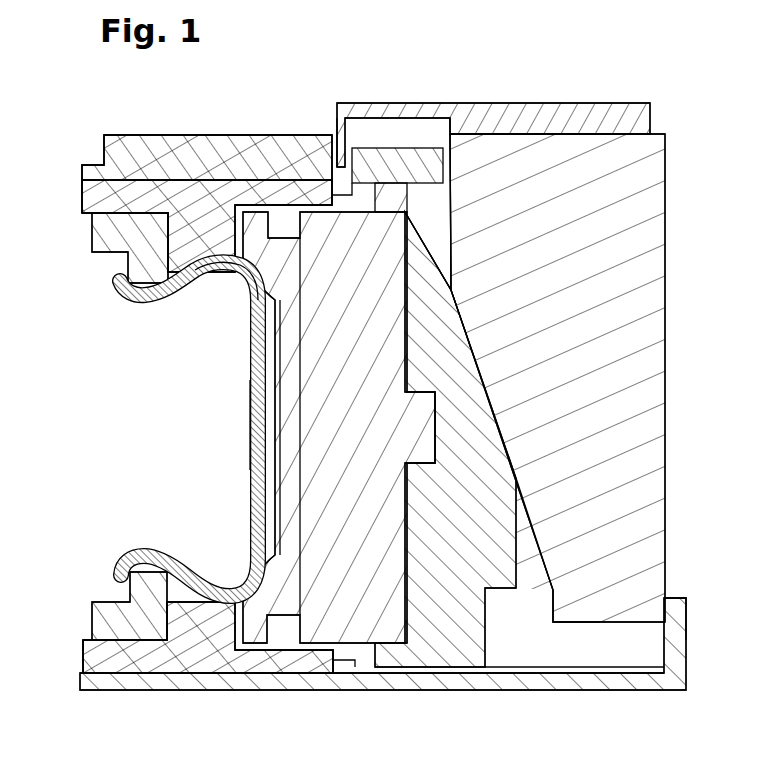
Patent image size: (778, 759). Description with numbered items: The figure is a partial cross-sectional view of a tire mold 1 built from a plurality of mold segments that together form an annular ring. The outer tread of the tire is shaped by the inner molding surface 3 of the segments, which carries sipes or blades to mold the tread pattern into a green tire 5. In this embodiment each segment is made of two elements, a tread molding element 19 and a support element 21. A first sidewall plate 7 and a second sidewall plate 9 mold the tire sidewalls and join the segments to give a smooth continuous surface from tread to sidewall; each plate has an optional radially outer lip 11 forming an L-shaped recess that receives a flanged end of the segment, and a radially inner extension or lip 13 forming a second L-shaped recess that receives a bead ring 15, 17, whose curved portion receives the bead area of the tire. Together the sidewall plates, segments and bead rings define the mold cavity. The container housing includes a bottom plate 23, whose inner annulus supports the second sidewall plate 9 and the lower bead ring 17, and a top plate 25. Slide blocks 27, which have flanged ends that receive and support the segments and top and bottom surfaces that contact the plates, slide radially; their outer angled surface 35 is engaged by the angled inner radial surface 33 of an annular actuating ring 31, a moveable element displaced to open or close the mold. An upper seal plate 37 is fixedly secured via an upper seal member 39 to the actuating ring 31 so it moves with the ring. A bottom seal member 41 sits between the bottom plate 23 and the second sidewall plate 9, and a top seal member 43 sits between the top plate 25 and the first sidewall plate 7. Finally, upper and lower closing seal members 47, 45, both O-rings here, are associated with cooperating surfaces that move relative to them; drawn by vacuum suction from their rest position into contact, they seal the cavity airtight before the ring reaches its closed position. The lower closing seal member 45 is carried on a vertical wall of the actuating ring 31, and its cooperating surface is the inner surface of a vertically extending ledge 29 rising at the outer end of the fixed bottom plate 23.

The tire mold 1 is at (98, 356).
The inner molding surface 3 is at (258, 395).
The green tire 5 is at (250, 424).
The first sidewall plate 7 is at (200, 208).
The second sidewall plate 9 is at (204, 656).
The radially outer lip 11 is at (299, 180).
The radially inner extension or lip 13 is at (110, 198).
The bead ring 15 is at (100, 228).
The bead ring 17 is at (94, 601).
The tread molding element 19 is at (276, 506).
The support element 21 is at (392, 617).
The bottom plate 23 is at (550, 640).
The top plate 25 is at (130, 157).
The slide block 27 is at (445, 640).
The vertically extending ledge 29 is at (684, 640).
The actuating ring 31 is at (641, 462).
The inner radial surface 33 is at (540, 580).
The outer angled surface 35 is at (440, 211).
The upper seal plate 37 is at (572, 120).
The upper seal member 39 is at (465, 135).
The bottom seal member 41 is at (300, 673).
The top seal member 43 is at (246, 282).
The lower closing seal member 45 is at (664, 610).
The upper closing seal member 47 is at (337, 138).